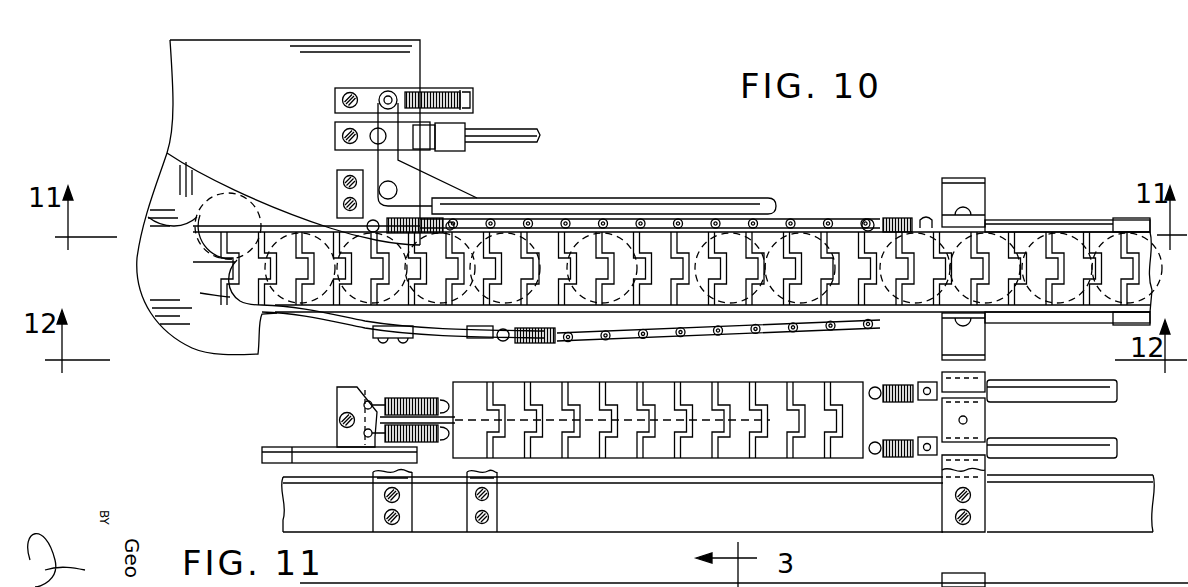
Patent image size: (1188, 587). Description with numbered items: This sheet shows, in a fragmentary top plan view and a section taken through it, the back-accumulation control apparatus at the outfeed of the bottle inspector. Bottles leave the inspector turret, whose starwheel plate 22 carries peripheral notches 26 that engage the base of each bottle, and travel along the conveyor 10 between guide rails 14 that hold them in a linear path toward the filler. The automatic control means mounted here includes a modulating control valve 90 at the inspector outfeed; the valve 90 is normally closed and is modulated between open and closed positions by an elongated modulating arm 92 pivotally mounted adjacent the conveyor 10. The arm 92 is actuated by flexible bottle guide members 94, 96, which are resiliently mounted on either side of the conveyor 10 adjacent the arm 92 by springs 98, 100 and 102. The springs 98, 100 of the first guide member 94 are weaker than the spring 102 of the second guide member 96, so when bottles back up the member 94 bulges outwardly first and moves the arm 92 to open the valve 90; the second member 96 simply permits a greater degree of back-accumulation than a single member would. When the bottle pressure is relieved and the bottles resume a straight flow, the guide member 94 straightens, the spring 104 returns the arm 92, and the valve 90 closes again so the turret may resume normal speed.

In FIG. 10, the conveyor 10 is at (290, 282).
In FIG. 11, the conveyor 10 is at (333, 480).
In FIG. 10, the guide rails 14 is at (1038, 222).
In FIG. 11, the guide rails 14 is at (1040, 390).
In FIG. 10, the starwheel plate 22 is at (210, 343).
In FIG. 10, the peripheral notches 26 is at (200, 257).
In FIG. 10, the modulating control valve 90 is at (452, 137).
In FIG. 10, the modulating arm 92 is at (618, 200).
In FIG. 11, the modulating arm 92 is at (620, 443).
In FIG. 10, the flexible bottle guide member 94 is at (796, 218).
In FIG. 11, the flexible bottle guide member 94 is at (693, 397).
In FIG. 10, the flexible bottle guide member 96 is at (782, 328).
In FIG. 10, the spring 98 is at (435, 225).
In FIG. 11, the spring 98 is at (403, 397).
In FIG. 10, the spring 100 is at (889, 215).
In FIG. 11, the spring 100 is at (893, 384).
In FIG. 10, the spring 102 is at (543, 335).
In FIG. 11, the spring 102 is at (543, 584).
In FIG. 10, the spring 104 is at (441, 88).